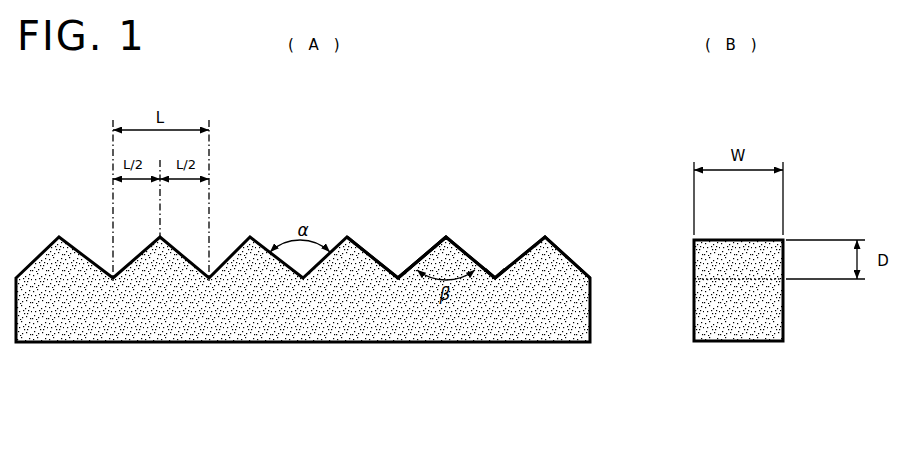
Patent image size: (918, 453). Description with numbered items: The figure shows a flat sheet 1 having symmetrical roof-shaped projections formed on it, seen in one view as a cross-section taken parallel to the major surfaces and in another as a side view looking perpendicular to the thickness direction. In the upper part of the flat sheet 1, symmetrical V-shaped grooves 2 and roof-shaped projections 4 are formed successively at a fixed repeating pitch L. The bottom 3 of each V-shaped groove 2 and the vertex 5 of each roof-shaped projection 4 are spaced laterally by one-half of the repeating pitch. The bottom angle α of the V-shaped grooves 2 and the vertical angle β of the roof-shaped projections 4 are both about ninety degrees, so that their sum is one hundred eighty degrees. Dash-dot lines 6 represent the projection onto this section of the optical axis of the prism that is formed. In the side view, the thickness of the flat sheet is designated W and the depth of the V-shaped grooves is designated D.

The flat sheet 1 is at (302, 350).
The V-shaped groove 2 is at (396, 255).
The bottom of V-shaped groove 3 is at (493, 284).
The roof-shaped projection 4 is at (549, 223).
The vertex of roof-shaped projection 5 is at (445, 233).
The projection of the optical axis 6 is at (110, 215).